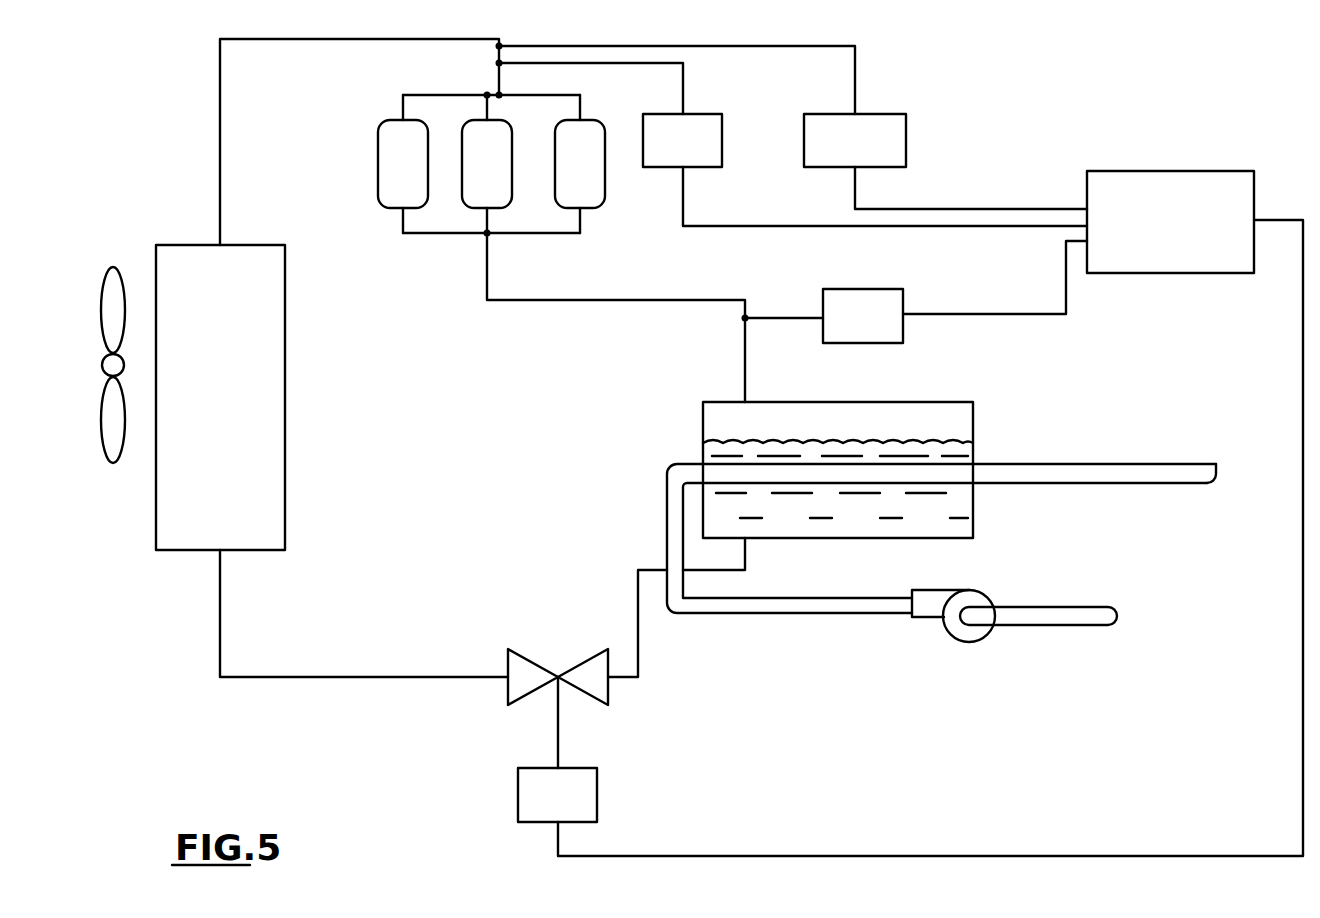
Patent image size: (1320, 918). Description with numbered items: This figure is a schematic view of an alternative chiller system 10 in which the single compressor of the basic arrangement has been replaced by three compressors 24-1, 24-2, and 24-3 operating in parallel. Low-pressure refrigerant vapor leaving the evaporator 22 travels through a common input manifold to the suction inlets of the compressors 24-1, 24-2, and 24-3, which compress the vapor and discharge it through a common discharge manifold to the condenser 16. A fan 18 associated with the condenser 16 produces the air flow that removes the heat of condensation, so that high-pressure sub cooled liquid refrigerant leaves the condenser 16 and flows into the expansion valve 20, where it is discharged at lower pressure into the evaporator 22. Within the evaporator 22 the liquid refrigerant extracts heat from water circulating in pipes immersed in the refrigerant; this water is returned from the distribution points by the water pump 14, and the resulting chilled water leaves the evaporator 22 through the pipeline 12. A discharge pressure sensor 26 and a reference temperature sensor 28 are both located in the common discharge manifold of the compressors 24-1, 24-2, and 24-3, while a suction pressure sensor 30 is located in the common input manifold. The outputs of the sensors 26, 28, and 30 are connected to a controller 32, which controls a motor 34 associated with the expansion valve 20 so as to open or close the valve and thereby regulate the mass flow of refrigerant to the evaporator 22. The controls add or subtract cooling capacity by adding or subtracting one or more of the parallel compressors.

The chiller system 10 is at (216, 771).
The pipeline 12 is at (1000, 464).
The water pump 14 is at (975, 597).
The condenser 16 is at (285, 380).
The fan 18 is at (101, 338).
The expansion valve 20 is at (535, 660).
The evaporator 22 is at (910, 402).
The compressor 24-1 is at (378, 160).
The compressor 24-2 is at (467, 122).
The compressor 24-3 is at (588, 210).
The discharge pressure sensor 26 is at (722, 131).
The reference temperature sensor 28 is at (906, 131).
The suction pressure sensor 30 is at (903, 300).
The controller 32 is at (1195, 171).
The motor 34 is at (597, 785).